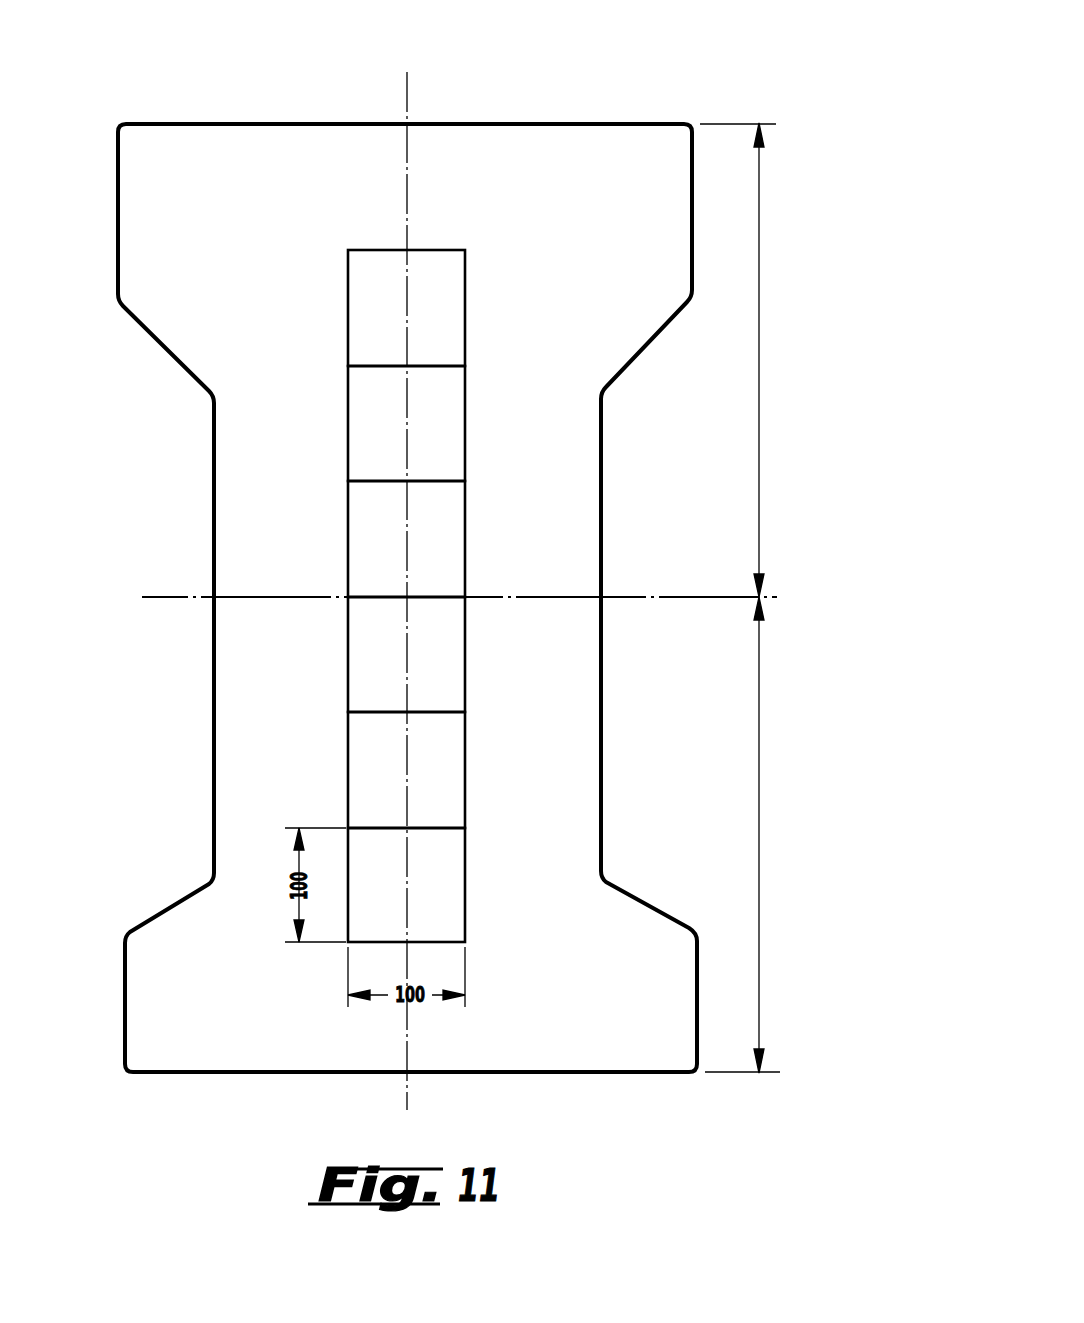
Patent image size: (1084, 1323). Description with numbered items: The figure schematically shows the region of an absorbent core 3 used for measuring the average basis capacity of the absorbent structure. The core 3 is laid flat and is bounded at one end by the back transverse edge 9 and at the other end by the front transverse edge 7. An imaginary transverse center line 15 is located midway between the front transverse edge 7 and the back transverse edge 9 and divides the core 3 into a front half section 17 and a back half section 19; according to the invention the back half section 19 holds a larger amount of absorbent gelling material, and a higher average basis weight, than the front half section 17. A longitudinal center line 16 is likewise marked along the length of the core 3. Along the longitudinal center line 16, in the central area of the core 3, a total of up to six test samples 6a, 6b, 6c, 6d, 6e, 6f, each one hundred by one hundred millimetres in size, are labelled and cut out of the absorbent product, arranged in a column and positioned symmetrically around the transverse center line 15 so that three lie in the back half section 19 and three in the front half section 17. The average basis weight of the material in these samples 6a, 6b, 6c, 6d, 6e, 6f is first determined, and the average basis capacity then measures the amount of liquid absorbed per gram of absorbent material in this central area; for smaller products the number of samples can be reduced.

The absorbent core 3 is at (675, 95).
The back transverse edge 9 is at (540, 120).
The front transverse edge 7 is at (543, 1075).
The longitudinal center line 16 is at (404, 94).
The transverse center line 15 is at (155, 596).
The test sample 6a is at (446, 313).
The test sample 6b is at (446, 426).
The test sample 6c is at (446, 541).
The test sample 6d is at (446, 658).
The test sample 6e is at (446, 773).
The test sample 6f is at (446, 888).
The back half section 19 is at (747, 360).
The front half section 17 is at (752, 835).